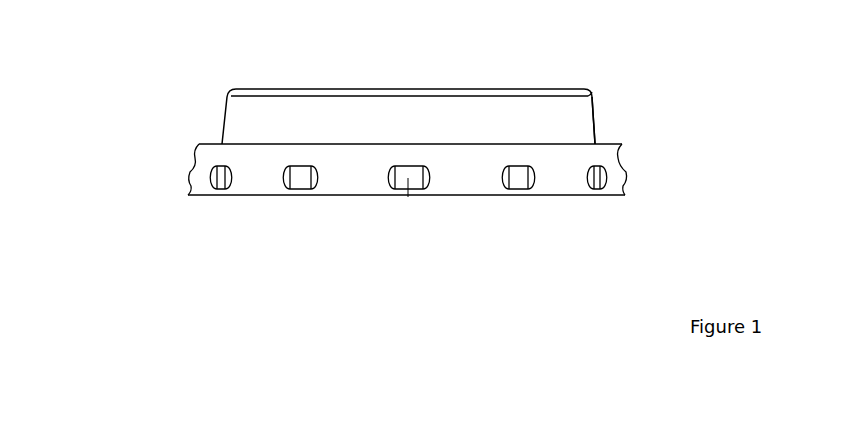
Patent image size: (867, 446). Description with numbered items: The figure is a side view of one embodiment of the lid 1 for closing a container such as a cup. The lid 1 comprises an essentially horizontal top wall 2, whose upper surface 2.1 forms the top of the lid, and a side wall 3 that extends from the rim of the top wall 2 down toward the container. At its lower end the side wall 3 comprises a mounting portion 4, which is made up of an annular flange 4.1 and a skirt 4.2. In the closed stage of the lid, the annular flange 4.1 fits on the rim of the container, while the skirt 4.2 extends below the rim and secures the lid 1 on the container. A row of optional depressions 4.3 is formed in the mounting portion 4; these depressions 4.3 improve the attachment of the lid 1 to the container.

The lid 1 is at (400, 129).
The top wall 2 is at (418, 72).
The upper surface 2.1 is at (565, 90).
The side wall 3 is at (642, 128).
The mounting portion 4 is at (400, 147).
The annular flange 4.1 is at (197, 147).
The skirt 4.2 is at (620, 183).
The depressions 4.3 is at (523, 172).